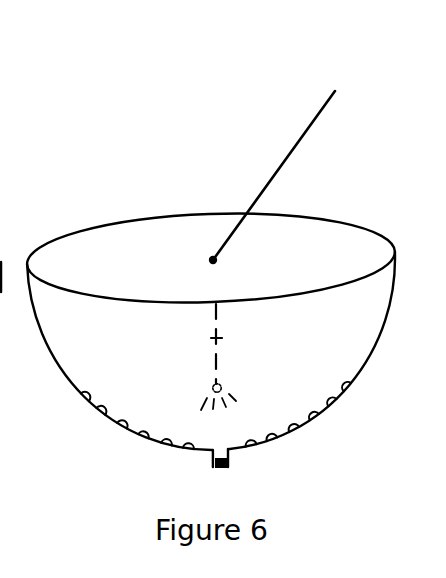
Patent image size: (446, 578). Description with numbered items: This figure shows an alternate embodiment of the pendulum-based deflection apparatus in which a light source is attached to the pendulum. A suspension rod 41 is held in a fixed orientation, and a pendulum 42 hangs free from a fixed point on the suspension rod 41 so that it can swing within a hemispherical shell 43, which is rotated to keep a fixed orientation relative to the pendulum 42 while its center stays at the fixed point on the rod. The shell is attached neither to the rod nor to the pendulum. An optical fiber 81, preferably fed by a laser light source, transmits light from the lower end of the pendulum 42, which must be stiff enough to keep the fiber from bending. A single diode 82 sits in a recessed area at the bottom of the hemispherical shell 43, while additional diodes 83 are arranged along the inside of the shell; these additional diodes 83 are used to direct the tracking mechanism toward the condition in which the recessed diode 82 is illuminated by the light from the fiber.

The suspension rod 41 is at (304, 134).
The pendulum 42 is at (226, 336).
The hemispherical shell 43 is at (50, 408).
The optical fiber 81 is at (223, 387).
The single diode 82 is at (228, 462).
The additional diodes 83 is at (145, 438).